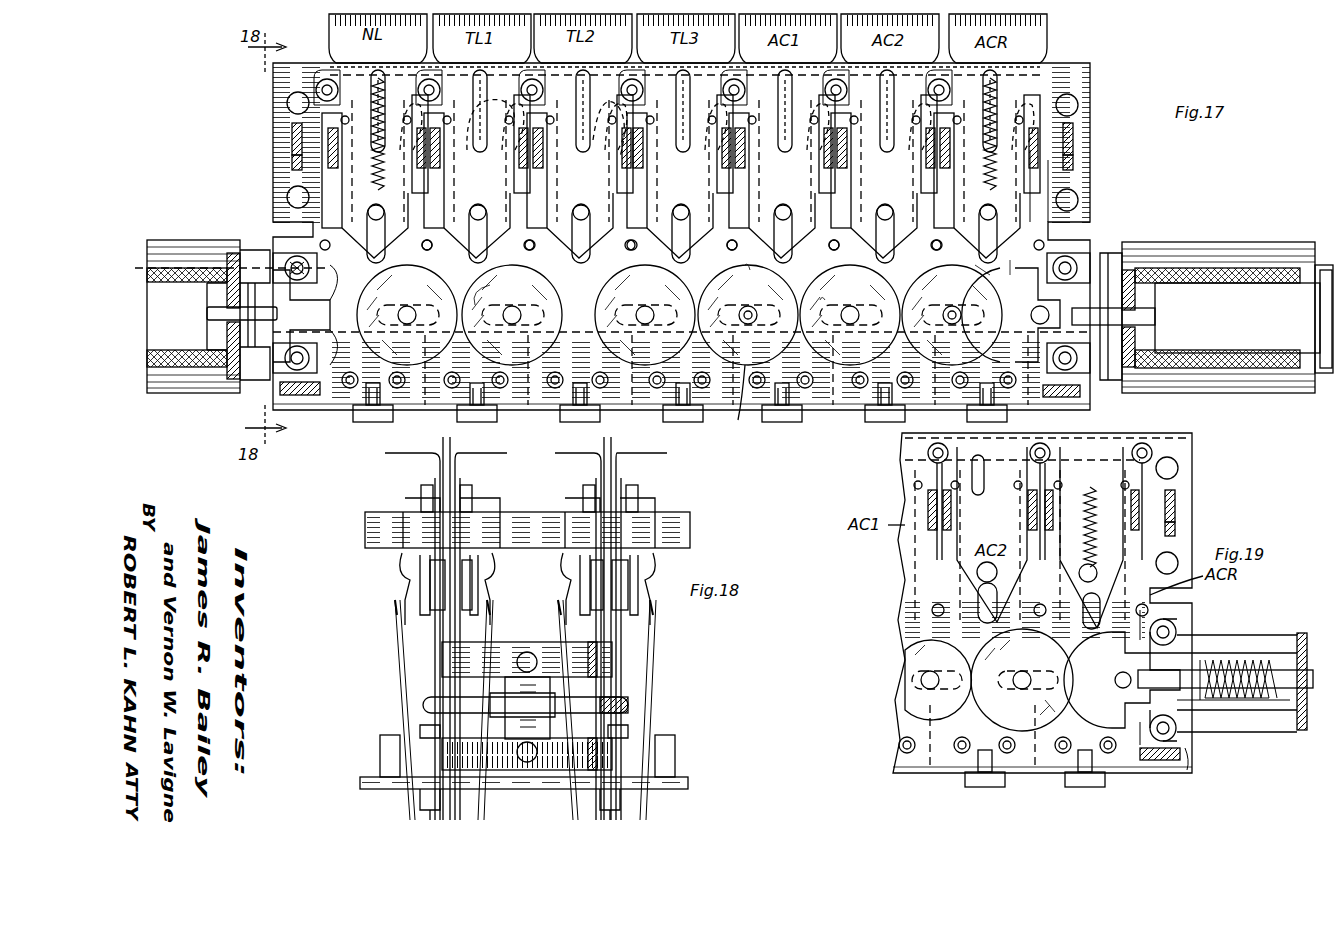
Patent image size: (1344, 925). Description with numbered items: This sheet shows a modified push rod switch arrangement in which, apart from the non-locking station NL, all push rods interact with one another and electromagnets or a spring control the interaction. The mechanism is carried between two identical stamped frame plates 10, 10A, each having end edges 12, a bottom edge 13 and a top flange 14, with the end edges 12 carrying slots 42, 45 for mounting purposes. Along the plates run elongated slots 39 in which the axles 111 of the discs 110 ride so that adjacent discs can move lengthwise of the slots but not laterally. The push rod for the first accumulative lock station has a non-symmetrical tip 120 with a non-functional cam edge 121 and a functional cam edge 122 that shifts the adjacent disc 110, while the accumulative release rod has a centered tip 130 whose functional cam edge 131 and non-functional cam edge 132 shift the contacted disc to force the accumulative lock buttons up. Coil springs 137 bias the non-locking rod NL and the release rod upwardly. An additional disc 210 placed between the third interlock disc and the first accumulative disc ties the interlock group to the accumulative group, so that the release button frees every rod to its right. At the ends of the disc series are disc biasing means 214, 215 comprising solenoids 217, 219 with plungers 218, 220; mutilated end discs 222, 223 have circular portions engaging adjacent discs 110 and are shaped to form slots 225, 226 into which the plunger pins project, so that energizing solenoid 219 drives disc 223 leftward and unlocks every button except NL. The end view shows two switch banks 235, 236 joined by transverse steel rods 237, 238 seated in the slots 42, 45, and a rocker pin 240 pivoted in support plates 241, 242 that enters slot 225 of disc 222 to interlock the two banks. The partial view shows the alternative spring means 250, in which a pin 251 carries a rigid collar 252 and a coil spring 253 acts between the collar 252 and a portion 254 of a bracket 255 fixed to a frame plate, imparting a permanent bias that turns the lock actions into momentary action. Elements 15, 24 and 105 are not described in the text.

In FIG. 17, the frame plate 10 is at (1090, 84).
In FIG. 18, the frame plate 10 is at (435, 478).
In FIG. 19, the frame plate 10 is at (895, 748).
In FIG. 18, the frame plate 10A is at (455, 472).
In FIG. 17, the frame plate end 12 is at (287, 103).
In FIG. 18, the frame plate end 12 is at (442, 660).
In FIG. 19, the frame plate end 12 is at (1180, 468).
In FIG. 17, the bottom edge 13 is at (830, 412).
In FIG. 19, the bottom edge 13 is at (930, 780).
In FIG. 17, the flange 14 is at (1080, 63).
In FIG. 18, the flange 14 is at (385, 456).
In FIG. 18, the bottom plate 15 is at (640, 760).
In FIG. 19, the bottom plate 15 is at (1190, 765).
In FIG. 17, the side plate 24 is at (1042, 222).
In FIG. 17, the elongated slot 39 is at (512, 312).
In FIG. 17, the slot 42 is at (290, 160).
In FIG. 18, the slot 42 is at (690, 530).
In FIG. 19, the slot 42 is at (1180, 530).
In FIG. 17, the slot 45 is at (275, 388).
In FIG. 17, the link 105 is at (600, 108).
In FIG. 17, the disc 110 is at (628, 315).
In FIG. 19, the disc 110 is at (988, 680).
In FIG. 17, the axle 111 is at (512, 325).
In FIG. 17, the tip 120 is at (757, 314).
In FIG. 17, the cam edge 121 is at (756, 262).
In FIG. 17, the cam edge 122 is at (812, 298).
In FIG. 17, the tip 130 is at (953, 314).
In FIG. 17, the cam edge 131 is at (985, 262).
In FIG. 17, the cam edge 132 is at (1003, 268).
In FIG. 17, the coil spring 137 is at (386, 78).
In FIG. 17, the additional disc 210 is at (737, 402).
In FIG. 17, the disc biasing means 214 is at (158, 403).
In FIG. 17, the disc biasing means 215 is at (1294, 238).
In FIG. 17, the solenoid 217 is at (196, 265).
In FIG. 17, the plunger 218 is at (150, 268).
In FIG. 17, the solenoid 219 is at (1222, 244).
In FIG. 17, the plunger 220 is at (1202, 316).
In FIG. 17, the mutilated end disc 222 is at (340, 380).
In FIG. 17, the mutilated end disc 223 is at (1020, 345).
In FIG. 19, the mutilated end disc 223 is at (1122, 680).
In FIG. 17, the slot 225 is at (330, 295).
In FIG. 17, the slot 226 is at (1090, 375).
In FIG. 19, the slot 226 is at (1177, 640).
In FIG. 18, the switch bank 235 is at (652, 496).
In FIG. 17, the switch bank 236 is at (300, 397).
In FIG. 18, the switch bank 236 is at (412, 503).
In FIG. 19, the switch bank 236 is at (1182, 756).
In FIG. 17, the steel rod 237 is at (290, 129).
In FIG. 18, the steel rod 237 is at (365, 530).
In FIG. 19, the steel rod 237 is at (1178, 498).
In FIG. 17, the steel rod 238 is at (1085, 395).
In FIG. 18, the steel rod 238 is at (690, 784).
In FIG. 17, the rocker pin 240 is at (262, 262).
In FIG. 18, the rocker pin 240 is at (423, 704).
In FIG. 18, the support plate 241 is at (543, 650).
In FIG. 18, the support plate 242 is at (522, 770).
In FIG. 19, the spring means 250 is at (1281, 639).
In FIG. 19, the pin 251 is at (1205, 650).
In FIG. 19, the collar 252 is at (1255, 633).
In FIG. 19, the coil spring 253 is at (1300, 712).
In FIG. 19, the bracket portion 254 is at (1296, 730).
In FIG. 19, the bracket 255 is at (1240, 735).
In FIG. 18, the non-locking push rod station NL is at (450, 444).